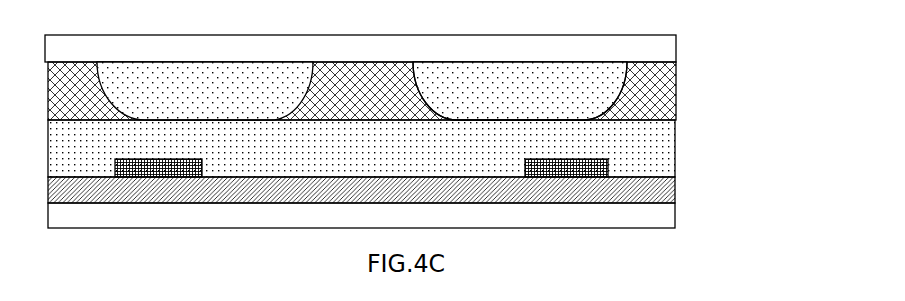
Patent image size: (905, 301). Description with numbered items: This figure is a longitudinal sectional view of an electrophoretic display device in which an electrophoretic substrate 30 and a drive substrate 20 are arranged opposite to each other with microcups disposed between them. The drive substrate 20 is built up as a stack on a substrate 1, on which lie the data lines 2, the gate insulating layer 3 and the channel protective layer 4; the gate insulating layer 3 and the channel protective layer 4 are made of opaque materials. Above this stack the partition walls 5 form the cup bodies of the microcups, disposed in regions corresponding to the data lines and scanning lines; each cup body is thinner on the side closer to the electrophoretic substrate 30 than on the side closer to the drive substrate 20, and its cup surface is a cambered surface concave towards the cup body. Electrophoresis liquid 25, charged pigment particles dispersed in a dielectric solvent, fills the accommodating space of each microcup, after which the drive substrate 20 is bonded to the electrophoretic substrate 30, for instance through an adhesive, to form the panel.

The electrophoretic substrate 30 is at (633, 45).
The electrophoresis liquid 25 is at (508, 88).
The partition wall 5 is at (677, 75).
The channel protective layer 4 is at (650, 141).
The data line 2 is at (610, 163).
The gate insulating layer 3 is at (658, 188).
The substrate 1 is at (398, 217).
The drive substrate 20 is at (430, 168).